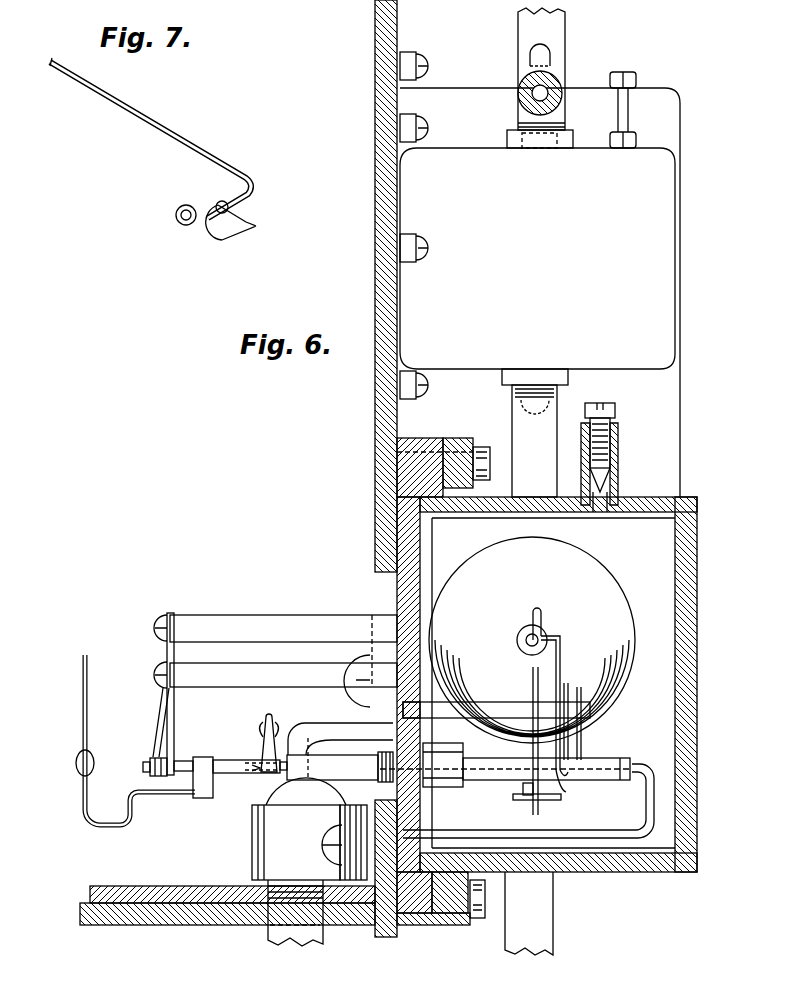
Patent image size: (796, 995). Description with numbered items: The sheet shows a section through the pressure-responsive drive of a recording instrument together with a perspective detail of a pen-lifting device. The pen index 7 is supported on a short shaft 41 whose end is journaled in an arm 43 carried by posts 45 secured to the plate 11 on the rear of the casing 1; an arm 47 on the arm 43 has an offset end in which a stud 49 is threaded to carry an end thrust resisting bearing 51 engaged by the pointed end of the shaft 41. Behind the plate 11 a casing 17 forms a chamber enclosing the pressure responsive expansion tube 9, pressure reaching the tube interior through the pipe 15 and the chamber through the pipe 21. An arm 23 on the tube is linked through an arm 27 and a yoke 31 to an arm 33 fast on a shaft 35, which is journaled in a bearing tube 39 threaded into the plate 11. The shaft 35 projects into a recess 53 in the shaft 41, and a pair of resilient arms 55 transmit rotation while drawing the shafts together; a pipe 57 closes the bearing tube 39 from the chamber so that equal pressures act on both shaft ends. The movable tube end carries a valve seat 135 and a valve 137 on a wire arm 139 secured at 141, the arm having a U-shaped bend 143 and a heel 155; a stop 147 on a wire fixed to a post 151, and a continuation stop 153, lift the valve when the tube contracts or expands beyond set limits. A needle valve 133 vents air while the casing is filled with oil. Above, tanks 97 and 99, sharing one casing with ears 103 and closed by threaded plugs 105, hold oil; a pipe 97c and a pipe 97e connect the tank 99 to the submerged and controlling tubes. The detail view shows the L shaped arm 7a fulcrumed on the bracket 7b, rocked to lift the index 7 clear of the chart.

In FIG. 7, the L shaped arm 7a is at (180, 145).
In FIG. 7, the bracket 7b is at (245, 220).
In FIG. 6, the casing 1 is at (378, 445).
In FIG. 6, the plate 11 is at (395, 487).
In FIG. 6, the tank 99 is at (662, 258).
In FIG. 6, the tank 97 is at (668, 392).
In FIG. 6, the ears 103 is at (412, 115).
In FIG. 6, the threaded plugs 105 is at (628, 132).
In FIG. 6, the pipe 15 is at (522, 24).
In FIG. 6, the pipe 97e is at (545, 52).
In FIG. 6, the pipe 21 is at (520, 85).
In FIG. 6, the pipe 97c is at (565, 394).
In FIG. 6, the needle valve 133 is at (612, 436).
In FIG. 6, the casing 17 is at (698, 555).
In FIG. 6, the pressure responsive expansion tube 9 is at (616, 597).
In FIG. 6, the valve seat 135 is at (528, 630).
In FIG. 6, the valve 137 is at (527, 638).
In FIG. 6, the U-shaped bend 143 is at (541, 610).
In FIG. 6, the arm 139 is at (562, 656).
In FIG. 6, the arm 23 is at (545, 680).
In FIG. 6, the stop 147 is at (545, 712).
In FIG. 6, the securing point 141 is at (567, 695).
In FIG. 6, the post 151 is at (583, 700).
In FIG. 6, the shaft 35 is at (608, 760).
In FIG. 6, the bearing tube 39 is at (625, 740).
In FIG. 6, the arm 33 is at (492, 790).
In FIG. 6, the arm 27 is at (526, 800).
In FIG. 6, the yoke 31 is at (545, 802).
In FIG. 6, the stop 153 is at (568, 772).
In FIG. 6, the heel 155 is at (566, 792).
In FIG. 6, the pipe 57 is at (650, 810).
In FIG. 6, the posts 45 is at (275, 672).
In FIG. 6, the arm 43 is at (175, 705).
In FIG. 6, the arm 47 is at (160, 705).
In FIG. 6, the end thrust resisting bearing 51 is at (158, 763).
In FIG. 6, the stud 49 is at (143, 770).
In FIG. 6, the pen index 7 is at (90, 672).
In FIG. 6, the shaft 41 is at (227, 760).
In FIG. 6, the resilient arms 55 is at (269, 717).
In FIG. 6, the recess 53 is at (258, 770).